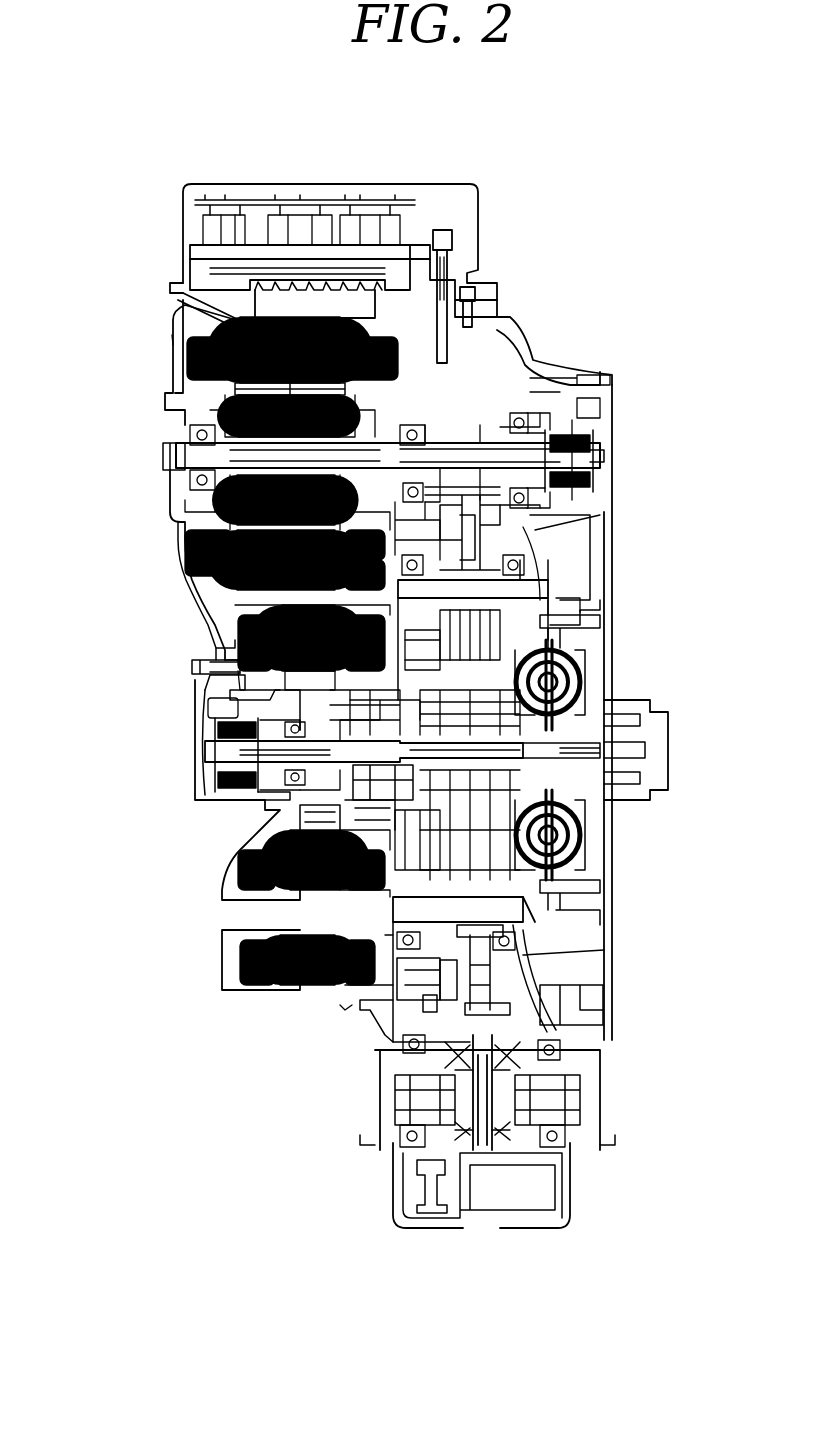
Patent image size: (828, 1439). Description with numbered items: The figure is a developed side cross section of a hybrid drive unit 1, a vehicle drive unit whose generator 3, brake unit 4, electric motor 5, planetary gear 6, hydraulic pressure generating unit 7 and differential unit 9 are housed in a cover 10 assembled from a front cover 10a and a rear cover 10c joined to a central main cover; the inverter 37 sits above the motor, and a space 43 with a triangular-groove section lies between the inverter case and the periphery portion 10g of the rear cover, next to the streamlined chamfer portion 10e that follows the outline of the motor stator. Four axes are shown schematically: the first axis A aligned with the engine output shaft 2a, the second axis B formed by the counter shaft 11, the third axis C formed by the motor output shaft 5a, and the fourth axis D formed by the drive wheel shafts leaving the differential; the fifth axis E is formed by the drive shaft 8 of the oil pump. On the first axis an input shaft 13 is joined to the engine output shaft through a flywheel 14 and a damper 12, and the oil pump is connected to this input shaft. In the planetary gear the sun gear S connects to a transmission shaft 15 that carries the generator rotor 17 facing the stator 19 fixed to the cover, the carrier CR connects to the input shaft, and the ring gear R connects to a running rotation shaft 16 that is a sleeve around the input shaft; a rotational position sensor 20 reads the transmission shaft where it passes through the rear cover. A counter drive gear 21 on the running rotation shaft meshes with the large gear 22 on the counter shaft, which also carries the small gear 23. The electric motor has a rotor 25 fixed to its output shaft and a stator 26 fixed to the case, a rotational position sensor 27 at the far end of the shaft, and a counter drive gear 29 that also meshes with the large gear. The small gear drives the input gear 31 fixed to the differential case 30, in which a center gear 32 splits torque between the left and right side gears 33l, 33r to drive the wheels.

The hybrid drive unit 1 is at (97, 243).
The engine output shaft 2a is at (650, 760).
The generator 3 is at (230, 622).
The brake unit 4 is at (190, 667).
The electric motor 5 is at (178, 362).
The motor output shaft 5a is at (440, 442).
The planetary gear 6 is at (382, 640).
The hydraulic pressure generating unit 7 is at (440, 642).
The drive shaft 8 is at (463, 638).
The differential unit 9 is at (548, 1172).
The cover 10 is at (510, 322).
The front cover 10a is at (262, 812).
The rear cover 10c is at (177, 515).
The streamlined chamfer portion 10e is at (200, 588).
The periphery portion 10g is at (172, 335).
The counter shaft 11 is at (548, 592).
The damper 12 is at (585, 702).
The input shaft 13 is at (590, 738).
The flywheel 14 is at (600, 622).
The transmission shaft 15 is at (235, 772).
The running rotation shaft 16 is at (580, 812).
The rotor 17 is at (238, 645).
The stator 19 is at (245, 618).
The rotational position sensor 20 is at (250, 790).
The counter drive gear 21 is at (575, 832).
The large gear 22 is at (485, 527).
The small gear 23 is at (400, 963).
The rotor 25 is at (200, 415).
The stator 26 is at (183, 278).
The rotational position sensor 27 is at (592, 437).
The counter drive gear 29 is at (488, 425).
The differential case 30 is at (420, 1150).
The input gear 31 is at (388, 1000).
The center gear 32 is at (497, 1133).
The left side gear 33l is at (440, 1090).
The right side gear 33r is at (545, 1093).
The inverter 37 is at (297, 200).
The space 43 is at (178, 300).
The first axis A is at (198, 748).
The second axis B is at (565, 880).
The third axis C is at (146, 473).
The fourth axis D is at (602, 1070).
The fifth axis E is at (565, 675).
The sun gear S is at (495, 332).
The carrier CR is at (338, 880).
The ring gear R is at (357, 880).